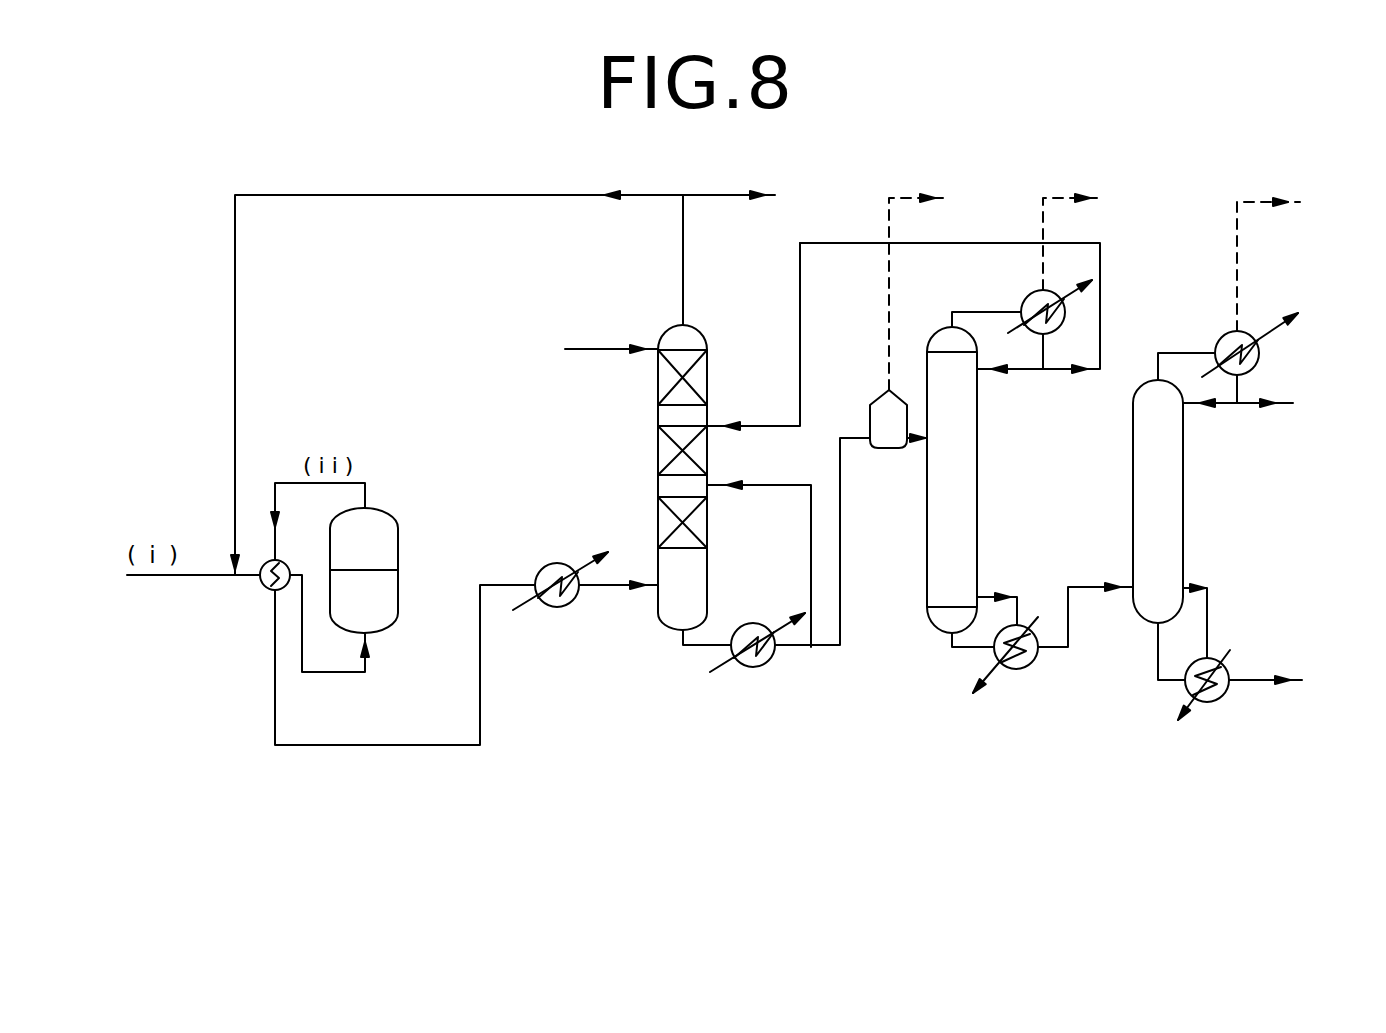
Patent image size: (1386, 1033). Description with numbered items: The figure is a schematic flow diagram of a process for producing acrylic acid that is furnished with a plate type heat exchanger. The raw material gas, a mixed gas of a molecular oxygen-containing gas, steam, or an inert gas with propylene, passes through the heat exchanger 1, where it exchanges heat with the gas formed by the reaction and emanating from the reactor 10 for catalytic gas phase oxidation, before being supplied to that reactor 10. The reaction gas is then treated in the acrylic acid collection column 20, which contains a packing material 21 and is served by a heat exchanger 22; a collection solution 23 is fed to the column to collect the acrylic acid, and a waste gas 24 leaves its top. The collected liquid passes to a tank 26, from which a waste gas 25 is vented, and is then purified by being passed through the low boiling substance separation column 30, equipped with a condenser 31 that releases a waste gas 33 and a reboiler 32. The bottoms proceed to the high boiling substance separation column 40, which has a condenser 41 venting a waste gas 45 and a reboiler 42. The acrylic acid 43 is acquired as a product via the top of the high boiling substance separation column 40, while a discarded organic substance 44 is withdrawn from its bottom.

The heat exchanger 1 is at (290, 563).
The reactor for catalytic gas phase oxidation 10 is at (398, 602).
The acrylic acid collection column 20 is at (681, 477).
The packing material 21 is at (707, 388).
The heat exchanger 22 is at (765, 661).
The collection solution 23 is at (593, 350).
The waste gas 24 is at (751, 198).
The waste gas 25 is at (939, 286).
The tank 26 is at (889, 448).
The low boiling substance separation column 30 is at (977, 490).
The condenser 31 is at (1027, 296).
The reboiler 32 is at (1033, 663).
The waste gas 33 is at (1094, 236).
The high boiling substance separation column 40 is at (1183, 495).
The condenser 41 is at (1262, 340).
The reboiler 42 is at (1225, 697).
The acrylic acid as a product 43 is at (1261, 397).
The discarded organic substance 44 is at (1287, 682).
The waste gas 45 is at (1289, 259).